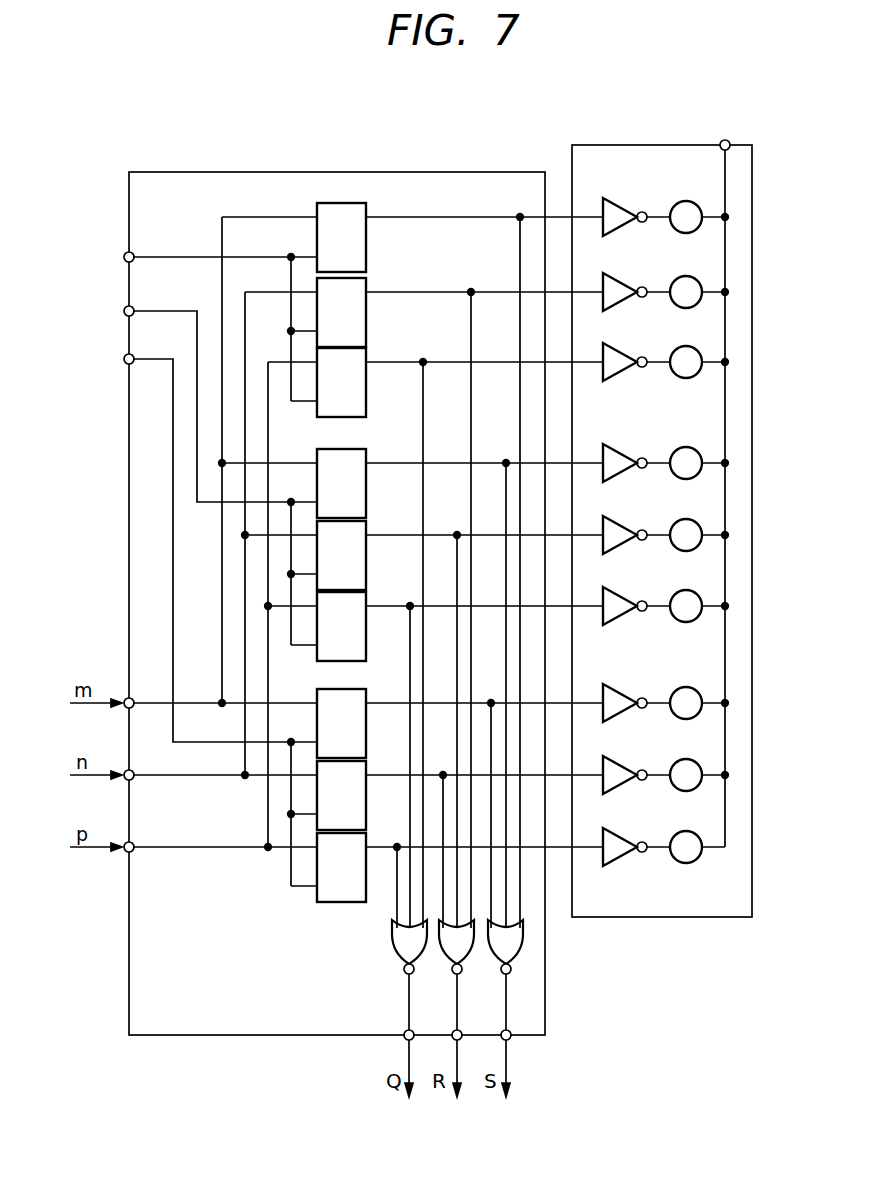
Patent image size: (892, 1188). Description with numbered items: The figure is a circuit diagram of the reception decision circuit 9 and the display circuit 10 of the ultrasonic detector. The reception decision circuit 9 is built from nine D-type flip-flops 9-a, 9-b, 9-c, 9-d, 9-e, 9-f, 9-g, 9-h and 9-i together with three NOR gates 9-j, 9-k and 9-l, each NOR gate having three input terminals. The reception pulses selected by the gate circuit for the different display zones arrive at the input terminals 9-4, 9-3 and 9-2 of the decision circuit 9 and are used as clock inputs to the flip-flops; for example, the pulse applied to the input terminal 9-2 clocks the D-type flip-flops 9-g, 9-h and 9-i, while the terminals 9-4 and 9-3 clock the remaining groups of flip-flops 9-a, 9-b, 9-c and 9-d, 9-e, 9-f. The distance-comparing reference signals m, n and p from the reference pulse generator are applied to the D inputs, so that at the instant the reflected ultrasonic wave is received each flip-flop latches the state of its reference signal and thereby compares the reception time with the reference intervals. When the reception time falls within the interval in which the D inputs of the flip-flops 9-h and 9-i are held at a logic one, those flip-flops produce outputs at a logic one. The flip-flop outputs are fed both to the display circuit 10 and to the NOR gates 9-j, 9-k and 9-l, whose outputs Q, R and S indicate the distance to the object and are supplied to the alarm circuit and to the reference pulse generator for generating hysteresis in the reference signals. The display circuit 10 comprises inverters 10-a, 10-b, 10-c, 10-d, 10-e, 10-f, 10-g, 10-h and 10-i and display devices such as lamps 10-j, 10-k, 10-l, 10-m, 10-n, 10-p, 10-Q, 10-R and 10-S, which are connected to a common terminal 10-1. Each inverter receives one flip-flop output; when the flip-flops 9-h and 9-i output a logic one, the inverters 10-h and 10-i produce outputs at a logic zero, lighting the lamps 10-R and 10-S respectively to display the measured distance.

The reception decision circuit 9 is at (285, 172).
The input terminal 9-2 is at (125, 355).
The input terminal 9-3 is at (125, 307).
The input terminal 9-4 is at (125, 253).
The D-type flip-flop 9-a is at (367, 209).
The D-type flip-flop 9-b is at (367, 284).
The D-type flip-flop 9-c is at (367, 354).
The D-type flip-flop 9-d is at (367, 455).
The D-type flip-flop 9-e is at (367, 527).
The D-type flip-flop 9-f is at (367, 598).
The D-type flip-flop 9-g is at (367, 696).
The D-type flip-flop 9-h is at (367, 768).
The D-type flip-flop 9-i is at (367, 838).
The NOR gate 9-j is at (392, 936).
The NOR gate 9-k is at (441, 950).
The NOR gate 9-l is at (491, 950).
The display circuit 10 is at (642, 145).
The terminal 10-1 is at (725, 140).
The inverter 10-a is at (626, 186).
The inverter 10-b is at (626, 261).
The inverter 10-c is at (630, 331).
The inverter 10-d is at (624, 432).
The inverter 10-e is at (626, 504).
The inverter 10-f is at (626, 576).
The inverter 10-g is at (617, 684).
The inverter 10-h is at (632, 745).
The inverter 10-i is at (628, 817).
The lamp 10-j is at (686, 201).
The lamp 10-k is at (686, 276).
The lamp 10-l is at (686, 346).
The lamp 10-m is at (686, 447).
The lamp 10-n is at (686, 519).
The lamp 10-p is at (686, 590).
The lamp 10-Q is at (686, 687).
The lamp 10-R is at (686, 759).
The lamp 10-S is at (686, 831).